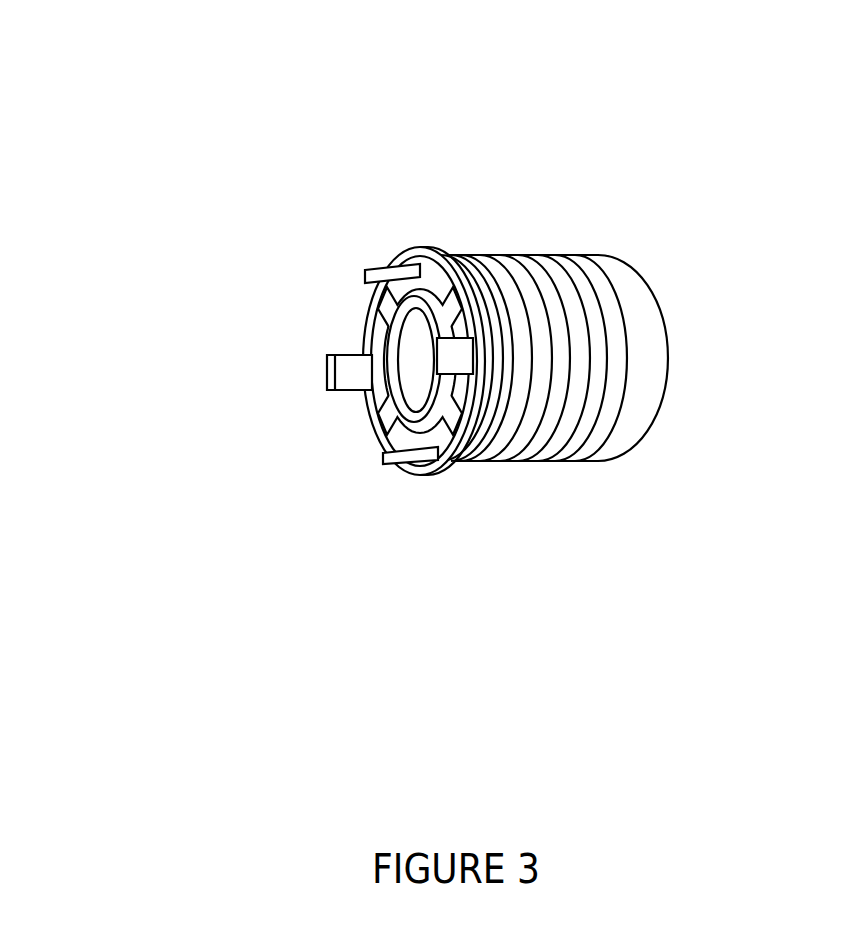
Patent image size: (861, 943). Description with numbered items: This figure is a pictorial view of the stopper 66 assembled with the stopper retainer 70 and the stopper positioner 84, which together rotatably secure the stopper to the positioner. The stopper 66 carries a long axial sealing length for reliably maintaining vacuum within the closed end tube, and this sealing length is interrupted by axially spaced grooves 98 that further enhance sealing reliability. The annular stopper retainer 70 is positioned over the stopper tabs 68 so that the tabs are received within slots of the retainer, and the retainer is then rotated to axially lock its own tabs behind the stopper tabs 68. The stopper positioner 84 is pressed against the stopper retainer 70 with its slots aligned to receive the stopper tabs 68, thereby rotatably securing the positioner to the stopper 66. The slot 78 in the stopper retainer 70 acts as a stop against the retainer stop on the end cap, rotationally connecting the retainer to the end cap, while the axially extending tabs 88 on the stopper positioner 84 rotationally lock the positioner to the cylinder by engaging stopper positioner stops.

The stopper 66 is at (633, 288).
The stopper tabs 68 is at (373, 422).
The stopper retainer 70 is at (440, 477).
The slot 78 is at (477, 275).
The stopper positioner 84 is at (360, 318).
The axially extending tabs 88 is at (327, 387).
The axially spaced grooves 98 is at (587, 443).